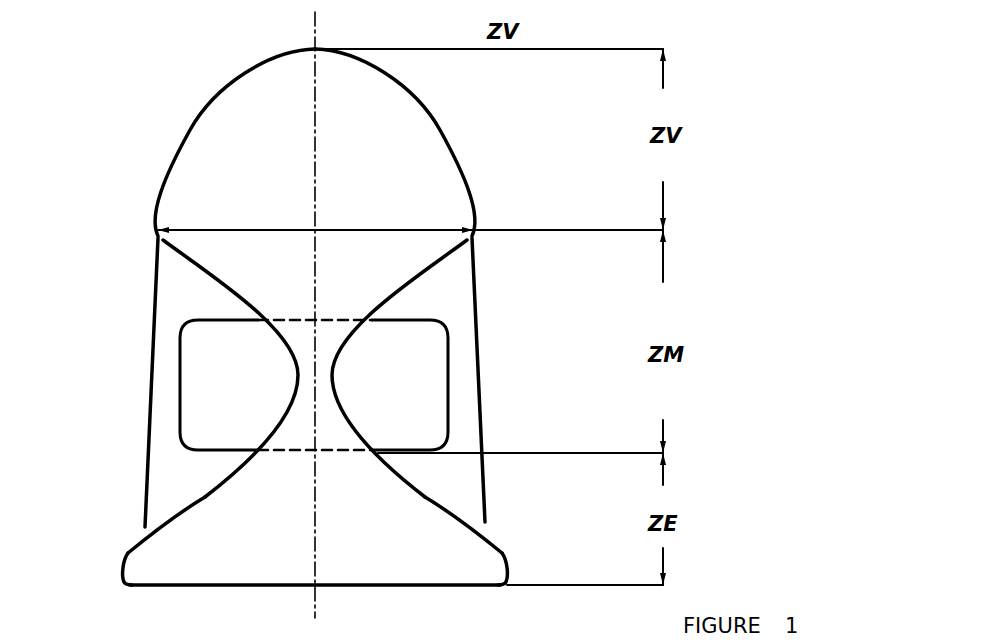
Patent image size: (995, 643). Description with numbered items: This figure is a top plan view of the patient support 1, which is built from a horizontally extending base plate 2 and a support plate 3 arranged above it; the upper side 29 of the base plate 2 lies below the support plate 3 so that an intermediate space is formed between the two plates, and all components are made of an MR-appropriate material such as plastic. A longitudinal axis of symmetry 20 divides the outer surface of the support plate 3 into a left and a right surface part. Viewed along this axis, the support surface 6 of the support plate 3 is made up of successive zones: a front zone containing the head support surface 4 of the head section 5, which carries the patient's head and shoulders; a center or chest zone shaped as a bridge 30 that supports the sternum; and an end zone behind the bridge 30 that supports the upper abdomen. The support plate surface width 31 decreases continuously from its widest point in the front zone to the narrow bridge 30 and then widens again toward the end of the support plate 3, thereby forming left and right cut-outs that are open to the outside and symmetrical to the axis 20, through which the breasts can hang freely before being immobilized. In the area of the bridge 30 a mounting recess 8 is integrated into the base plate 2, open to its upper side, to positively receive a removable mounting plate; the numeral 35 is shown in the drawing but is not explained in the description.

The patient support 1 is at (263, 553).
The base plate 2 is at (177, 277).
The support plate 3 is at (230, 185).
The head support surface 4 is at (418, 150).
The head section 5 is at (243, 100).
The support surface 6 is at (463, 565).
The mounting recess 8 is at (220, 350).
The longitudinal axis of symmetry 20 is at (318, 43).
The upper side of the base plate 29 is at (190, 290).
The bridge 30 is at (306, 375).
The support plate surface width 31 is at (378, 240).
The lower flank 35 is at (243, 510).